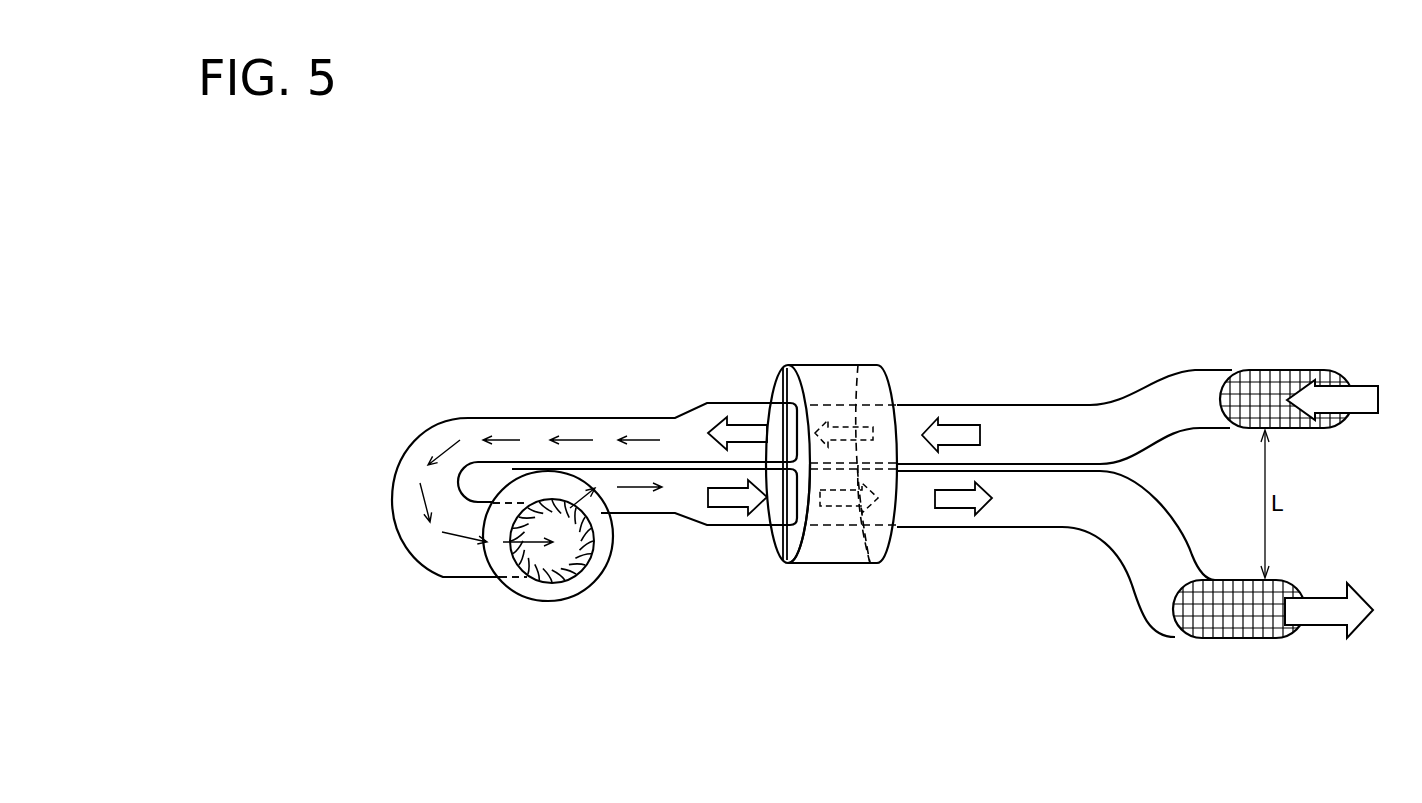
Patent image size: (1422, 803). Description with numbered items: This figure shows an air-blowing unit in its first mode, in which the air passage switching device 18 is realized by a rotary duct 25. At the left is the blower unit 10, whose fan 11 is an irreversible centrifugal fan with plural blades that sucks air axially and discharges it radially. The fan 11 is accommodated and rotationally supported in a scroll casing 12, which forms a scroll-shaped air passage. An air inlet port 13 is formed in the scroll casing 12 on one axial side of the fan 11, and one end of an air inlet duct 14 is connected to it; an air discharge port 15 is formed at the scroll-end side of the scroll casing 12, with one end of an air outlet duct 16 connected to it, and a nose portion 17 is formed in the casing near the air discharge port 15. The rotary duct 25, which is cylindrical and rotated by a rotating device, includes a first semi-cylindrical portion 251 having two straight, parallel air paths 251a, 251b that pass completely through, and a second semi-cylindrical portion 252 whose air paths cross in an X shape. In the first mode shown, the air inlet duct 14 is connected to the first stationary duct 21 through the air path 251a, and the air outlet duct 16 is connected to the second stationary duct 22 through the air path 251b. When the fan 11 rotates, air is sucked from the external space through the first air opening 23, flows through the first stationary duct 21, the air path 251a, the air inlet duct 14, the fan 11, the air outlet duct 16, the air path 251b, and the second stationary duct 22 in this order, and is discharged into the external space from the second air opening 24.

The blower unit 10 is at (553, 612).
The fan 11 is at (583, 588).
The scroll casing 12 is at (520, 596).
The air inlet port 13 is at (587, 575).
The air inlet duct 14 is at (508, 418).
The air discharge port 15 is at (552, 487).
The air outlet duct 16 is at (743, 528).
The nose portion 17 is at (605, 516).
The air passage switching device 18 is at (832, 358).
The first stationary duct 21 is at (1052, 405).
The second stationary duct 22 is at (1017, 520).
The first air opening 23 is at (1266, 370).
The second air opening 24 is at (1237, 640).
The rotary duct 25 is at (808, 365).
The first semi-cylindrical portion 251 is at (803, 565).
The air path 251a is at (856, 372).
The air path 251b is at (870, 565).
The second semi-cylindrical portion 252 is at (772, 562).